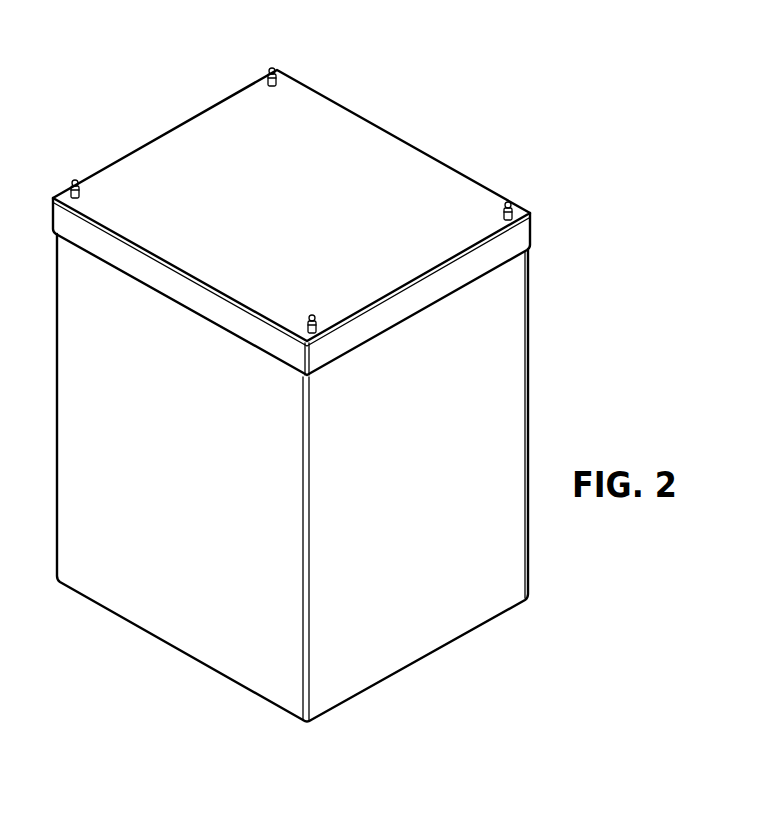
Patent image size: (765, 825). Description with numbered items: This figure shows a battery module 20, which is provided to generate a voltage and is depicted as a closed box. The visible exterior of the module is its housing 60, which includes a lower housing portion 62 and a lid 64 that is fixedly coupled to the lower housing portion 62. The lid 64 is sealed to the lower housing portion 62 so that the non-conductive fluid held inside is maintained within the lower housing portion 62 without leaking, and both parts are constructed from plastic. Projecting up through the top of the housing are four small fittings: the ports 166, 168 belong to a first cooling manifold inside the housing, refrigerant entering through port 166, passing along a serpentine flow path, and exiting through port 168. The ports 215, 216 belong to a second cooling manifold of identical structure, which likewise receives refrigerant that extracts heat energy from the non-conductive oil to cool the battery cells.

The battery module 20 is at (403, 80).
The housing 60 is at (434, 132).
The lower housing portion 62 is at (512, 406).
The lid 64 is at (470, 200).
The port 166 is at (311, 314).
The port 168 is at (508, 201).
The port 215 is at (76, 181).
The port 216 is at (273, 67).